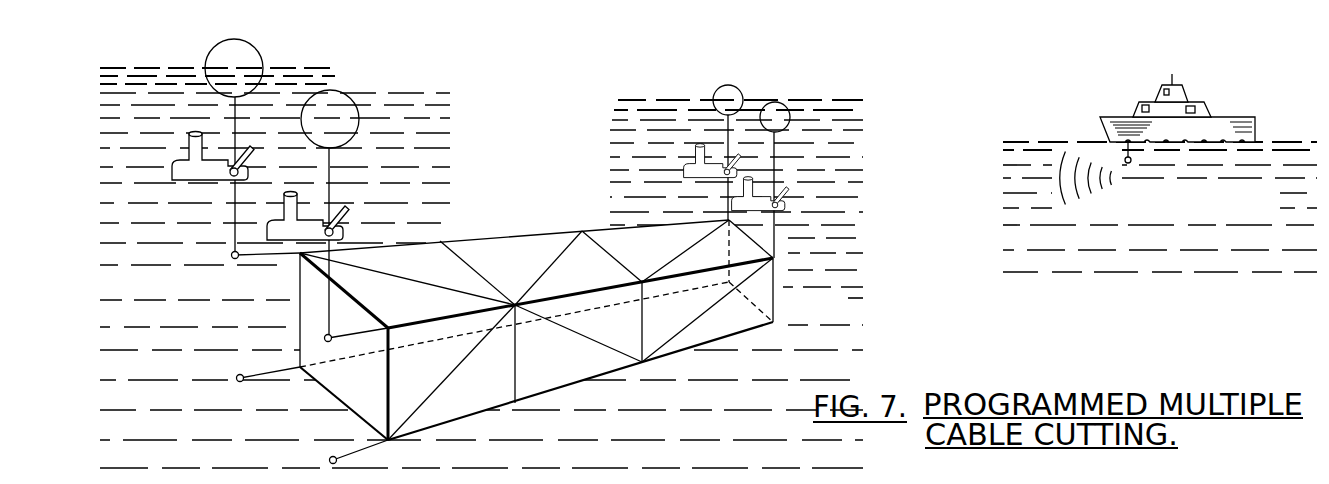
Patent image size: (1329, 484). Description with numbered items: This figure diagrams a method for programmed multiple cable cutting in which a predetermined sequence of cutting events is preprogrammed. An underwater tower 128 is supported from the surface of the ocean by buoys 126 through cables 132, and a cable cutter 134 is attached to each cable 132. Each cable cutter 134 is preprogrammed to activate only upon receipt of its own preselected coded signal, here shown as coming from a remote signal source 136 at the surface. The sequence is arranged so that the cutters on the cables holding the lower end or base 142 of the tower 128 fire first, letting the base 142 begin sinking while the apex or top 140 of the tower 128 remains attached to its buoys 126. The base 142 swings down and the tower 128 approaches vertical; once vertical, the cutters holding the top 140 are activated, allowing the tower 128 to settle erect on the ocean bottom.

The buoys 126 is at (256, 48).
The underwater tower 128 is at (585, 380).
The cables 132 is at (235, 116).
The cable cutters 134 is at (172, 172).
The remote signal source 136 is at (1132, 148).
The apex or top 140 is at (776, 275).
The lower end or base 142 is at (324, 337).